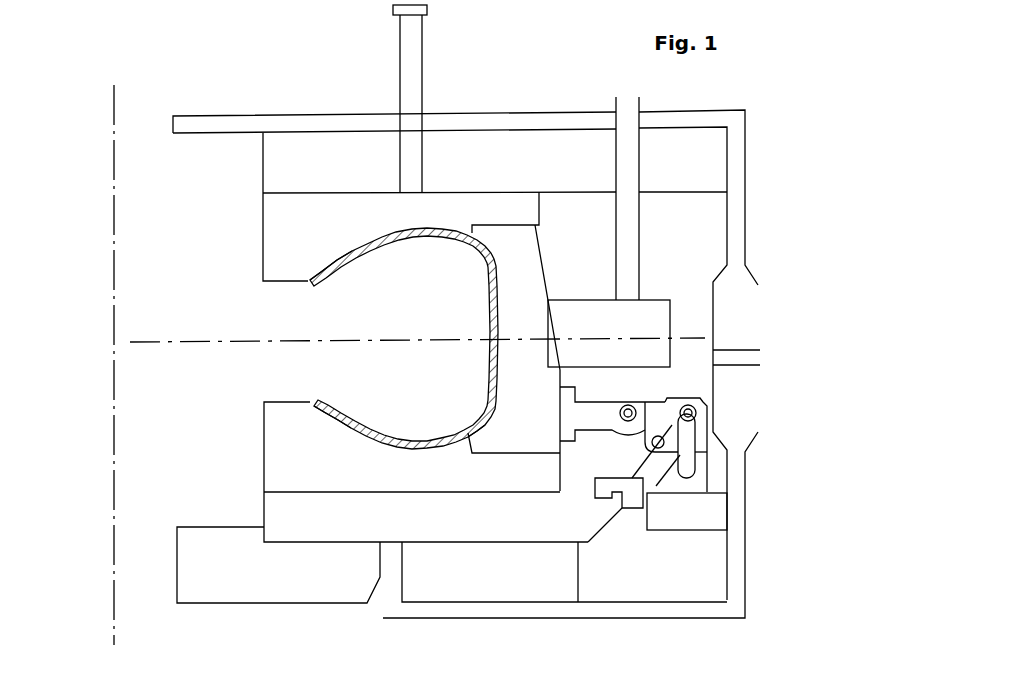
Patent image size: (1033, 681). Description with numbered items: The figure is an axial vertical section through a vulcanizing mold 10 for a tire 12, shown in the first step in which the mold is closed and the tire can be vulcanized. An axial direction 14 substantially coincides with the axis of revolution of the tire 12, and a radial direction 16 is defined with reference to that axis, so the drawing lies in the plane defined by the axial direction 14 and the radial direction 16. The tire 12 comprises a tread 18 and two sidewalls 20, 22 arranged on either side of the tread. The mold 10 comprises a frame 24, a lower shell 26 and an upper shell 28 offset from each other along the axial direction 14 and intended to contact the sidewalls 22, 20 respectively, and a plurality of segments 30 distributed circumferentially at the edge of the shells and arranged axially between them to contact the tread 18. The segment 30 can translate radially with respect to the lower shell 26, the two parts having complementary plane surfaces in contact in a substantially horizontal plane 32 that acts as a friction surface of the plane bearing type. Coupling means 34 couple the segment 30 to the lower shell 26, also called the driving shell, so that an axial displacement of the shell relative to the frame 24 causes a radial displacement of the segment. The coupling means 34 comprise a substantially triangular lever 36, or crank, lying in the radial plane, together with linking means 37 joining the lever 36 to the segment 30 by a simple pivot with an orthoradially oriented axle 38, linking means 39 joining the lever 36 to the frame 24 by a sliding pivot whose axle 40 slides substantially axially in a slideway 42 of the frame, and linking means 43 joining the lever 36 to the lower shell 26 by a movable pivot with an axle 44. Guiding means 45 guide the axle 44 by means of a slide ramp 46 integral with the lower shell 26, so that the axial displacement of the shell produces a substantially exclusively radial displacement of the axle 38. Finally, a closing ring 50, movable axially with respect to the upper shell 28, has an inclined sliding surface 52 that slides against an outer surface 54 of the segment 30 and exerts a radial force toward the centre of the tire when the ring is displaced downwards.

The vulcanizing mold 10 is at (780, 135).
The tire 12 is at (404, 264).
The axial direction 14 is at (114, 233).
The radial direction 16 is at (163, 341).
The tread 18 is at (494, 313).
The sidewall 20 is at (350, 257).
The sidewall 22 is at (327, 398).
The frame 24 is at (533, 567).
The lower shell 26 is at (298, 457).
The upper shell 28 is at (290, 228).
The segment 30 is at (478, 412).
The horizontal plane 32 is at (481, 487).
The coupling means 34 is at (685, 375).
The lever 36 is at (708, 458).
The linking means 37 is at (643, 380).
The axle 38 is at (626, 404).
The linking means 39 is at (654, 478).
The axle 40 is at (690, 400).
The slideway 42 is at (715, 447).
The linking means 43 is at (726, 407).
The axle 44 is at (670, 490).
The guiding means 45 is at (626, 441).
The slide ramp 46 is at (633, 477).
The closing ring 50 is at (565, 310).
The sliding surface 52 is at (490, 364).
The outer surface 54 is at (535, 241).